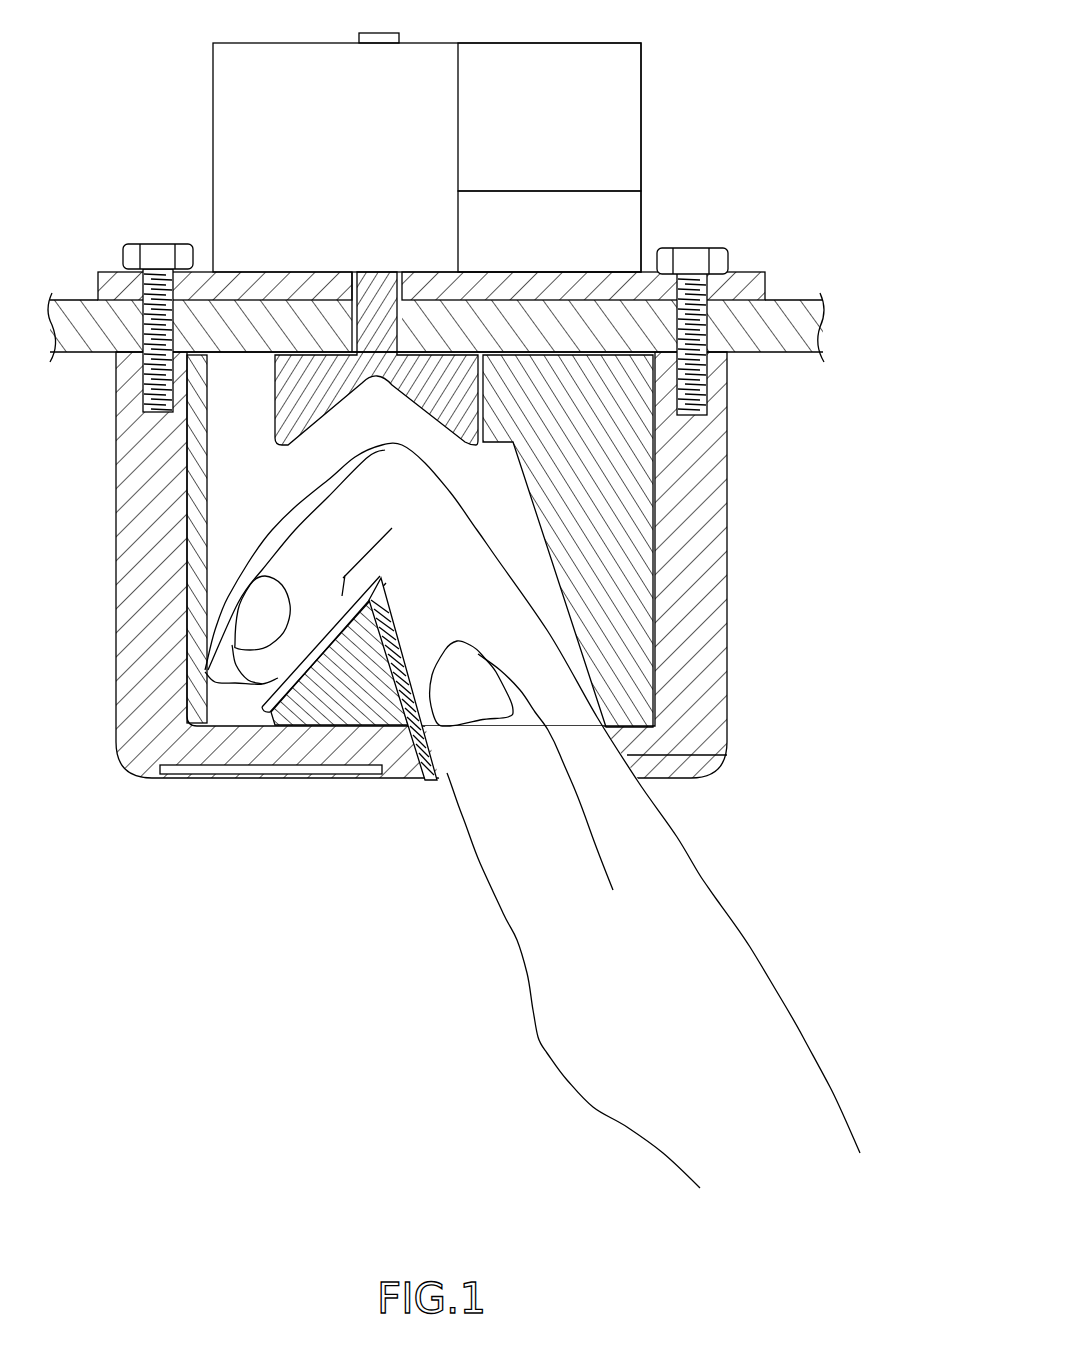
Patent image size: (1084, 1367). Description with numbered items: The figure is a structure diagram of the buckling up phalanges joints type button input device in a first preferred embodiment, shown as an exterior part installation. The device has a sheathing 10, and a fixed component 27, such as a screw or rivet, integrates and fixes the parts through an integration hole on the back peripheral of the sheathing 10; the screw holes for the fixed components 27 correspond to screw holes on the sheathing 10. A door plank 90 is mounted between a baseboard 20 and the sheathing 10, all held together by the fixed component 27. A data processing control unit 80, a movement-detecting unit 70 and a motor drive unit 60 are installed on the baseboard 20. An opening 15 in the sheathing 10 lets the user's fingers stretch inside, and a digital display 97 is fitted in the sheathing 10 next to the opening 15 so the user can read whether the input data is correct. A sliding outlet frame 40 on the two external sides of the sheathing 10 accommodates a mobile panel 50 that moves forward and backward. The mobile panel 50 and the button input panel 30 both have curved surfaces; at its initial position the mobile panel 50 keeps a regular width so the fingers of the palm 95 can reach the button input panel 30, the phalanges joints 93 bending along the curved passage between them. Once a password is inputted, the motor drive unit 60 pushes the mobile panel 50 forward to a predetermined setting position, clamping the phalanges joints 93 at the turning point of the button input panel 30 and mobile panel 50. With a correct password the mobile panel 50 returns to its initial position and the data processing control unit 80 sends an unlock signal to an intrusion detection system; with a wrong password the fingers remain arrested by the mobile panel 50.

The sheathing 10 is at (707, 490).
The opening 15 is at (722, 757).
The baseboard 20 is at (760, 277).
The fixed component 27 is at (152, 258).
The button input panel 30 is at (353, 688).
The sliding outlet frame 40 is at (636, 450).
The mobile panel 50 is at (357, 273).
The motor drive unit 60 is at (228, 122).
The movement-detecting unit 70 is at (575, 205).
The data processing control unit 80 is at (578, 60).
The door plank 90 is at (763, 357).
The phalanges joints 93 is at (250, 532).
The palm 95 is at (708, 898).
The digital display 97 is at (272, 774).